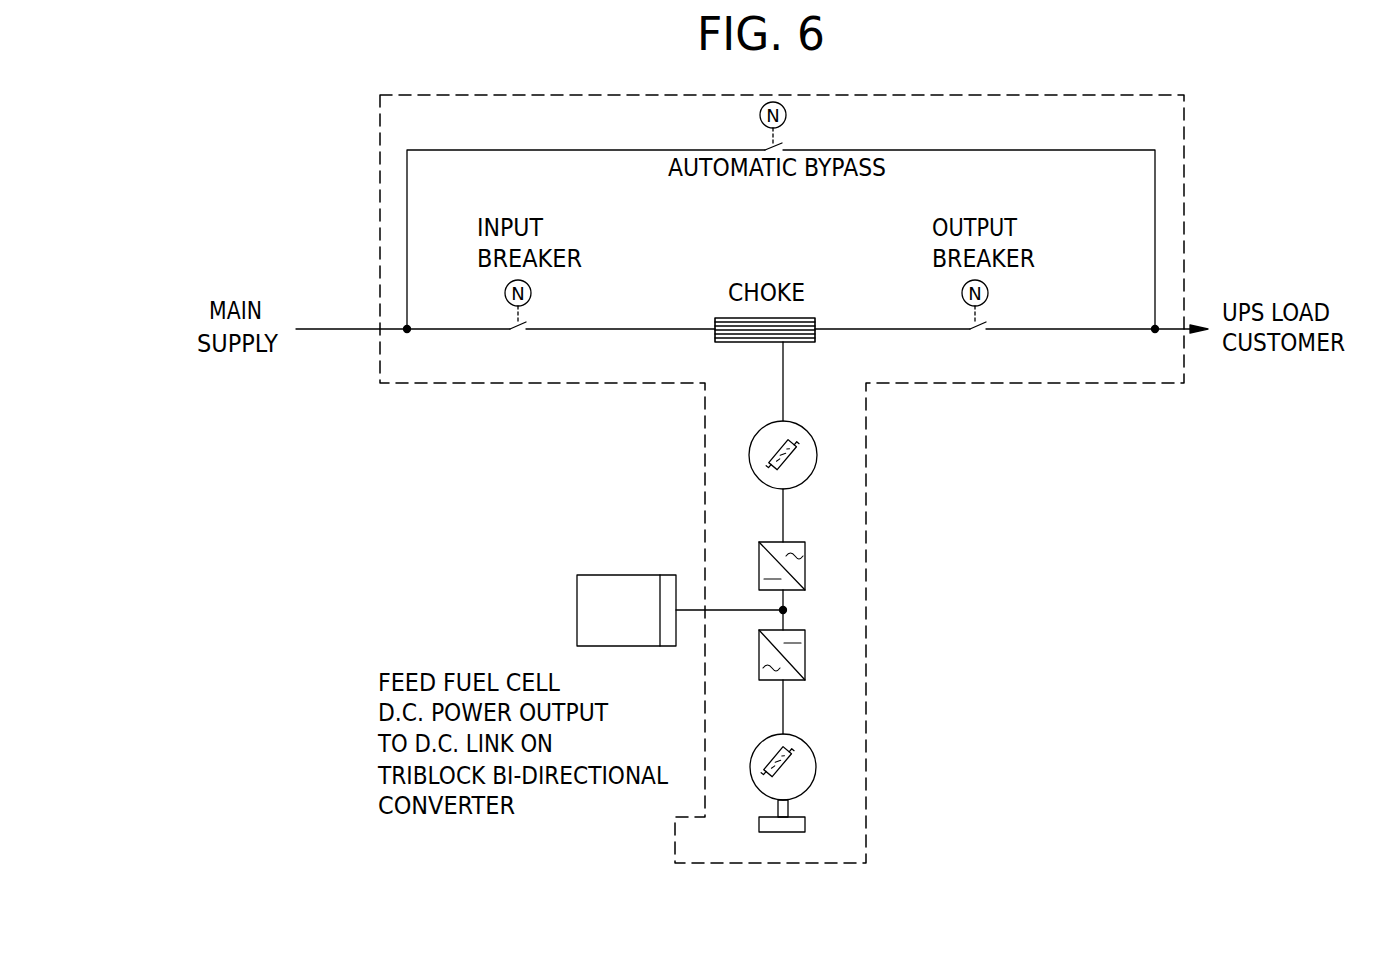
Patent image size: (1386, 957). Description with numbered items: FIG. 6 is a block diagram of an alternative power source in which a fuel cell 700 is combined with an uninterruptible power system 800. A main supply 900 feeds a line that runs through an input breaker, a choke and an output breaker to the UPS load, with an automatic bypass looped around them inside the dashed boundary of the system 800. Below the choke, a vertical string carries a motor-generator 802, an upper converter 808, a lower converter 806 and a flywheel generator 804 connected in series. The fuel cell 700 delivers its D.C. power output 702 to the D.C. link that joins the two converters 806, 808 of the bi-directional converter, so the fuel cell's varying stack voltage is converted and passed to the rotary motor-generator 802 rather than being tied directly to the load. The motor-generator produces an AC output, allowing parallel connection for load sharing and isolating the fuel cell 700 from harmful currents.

The fuel cell 700 is at (577, 600).
The fuel cell D.C. power output 702 is at (670, 582).
The uninterruptible power supply system 800 is at (867, 469).
The motor/generator 802 is at (806, 432).
The flywheel generator 804 is at (808, 742).
The bi-directional converter 806 is at (805, 653).
The bi-directional converter 808 is at (805, 567).
The main supply 900 is at (299, 329).